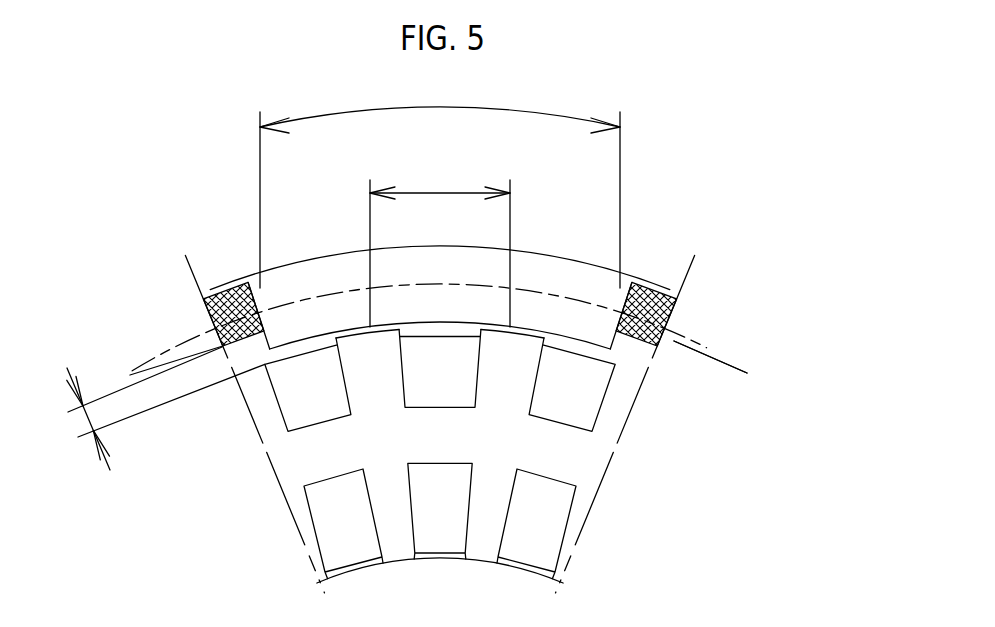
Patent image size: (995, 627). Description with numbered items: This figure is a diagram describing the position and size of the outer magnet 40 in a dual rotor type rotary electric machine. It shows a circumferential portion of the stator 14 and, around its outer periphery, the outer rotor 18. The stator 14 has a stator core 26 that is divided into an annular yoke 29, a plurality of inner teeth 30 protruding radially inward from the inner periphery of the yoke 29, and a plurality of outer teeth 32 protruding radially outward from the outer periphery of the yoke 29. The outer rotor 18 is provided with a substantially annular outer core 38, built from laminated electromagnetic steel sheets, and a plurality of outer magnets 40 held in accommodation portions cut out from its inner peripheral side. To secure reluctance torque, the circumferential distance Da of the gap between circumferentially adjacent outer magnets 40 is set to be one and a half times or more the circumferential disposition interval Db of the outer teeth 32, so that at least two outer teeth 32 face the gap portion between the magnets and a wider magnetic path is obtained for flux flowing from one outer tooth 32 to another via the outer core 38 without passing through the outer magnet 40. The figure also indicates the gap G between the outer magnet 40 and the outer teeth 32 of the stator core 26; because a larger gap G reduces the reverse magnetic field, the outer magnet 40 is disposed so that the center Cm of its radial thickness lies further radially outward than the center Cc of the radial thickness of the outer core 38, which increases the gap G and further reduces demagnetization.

The stator 14 is at (429, 461).
The outer rotor 18 is at (404, 255).
The stator core 26 is at (522, 457).
The yoke 29 is at (562, 453).
The inner teeth 30 is at (513, 520).
The outer teeth 32 is at (622, 407).
The outer core 38 is at (593, 277).
The outer magnet 40 is at (227, 307).
The circumferential distance Da is at (440, 183).
The circumferential disposition interval Db is at (440, 244).
The gap G is at (88, 419).
The center of the radial thickness of the outer magnet Cm is at (690, 330).
The center of the radial thickness of the outer core Cc is at (734, 358).